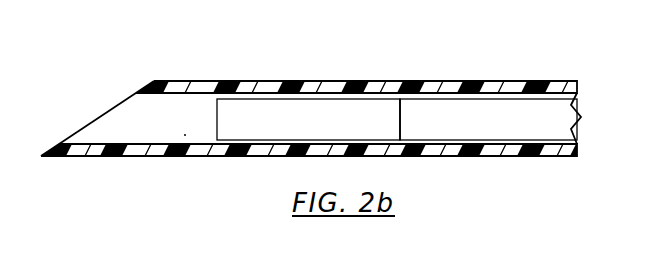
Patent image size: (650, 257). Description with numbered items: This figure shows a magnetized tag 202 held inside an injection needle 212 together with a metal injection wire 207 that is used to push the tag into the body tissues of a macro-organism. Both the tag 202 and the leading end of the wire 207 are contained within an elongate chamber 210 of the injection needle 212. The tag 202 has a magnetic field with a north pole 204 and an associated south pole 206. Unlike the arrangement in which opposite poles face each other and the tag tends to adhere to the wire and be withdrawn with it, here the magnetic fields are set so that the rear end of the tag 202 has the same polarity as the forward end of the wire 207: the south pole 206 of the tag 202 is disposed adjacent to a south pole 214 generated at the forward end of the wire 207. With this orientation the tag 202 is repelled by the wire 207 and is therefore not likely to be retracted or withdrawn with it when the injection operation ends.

The tag 202 is at (296, 113).
The north pole 204 is at (231, 113).
The south pole 206 is at (383, 112).
The metal injection wire 207 is at (497, 113).
The elongate chamber 210 is at (117, 118).
The injection needle 212 is at (97, 158).
The south pole 214 is at (413, 110).